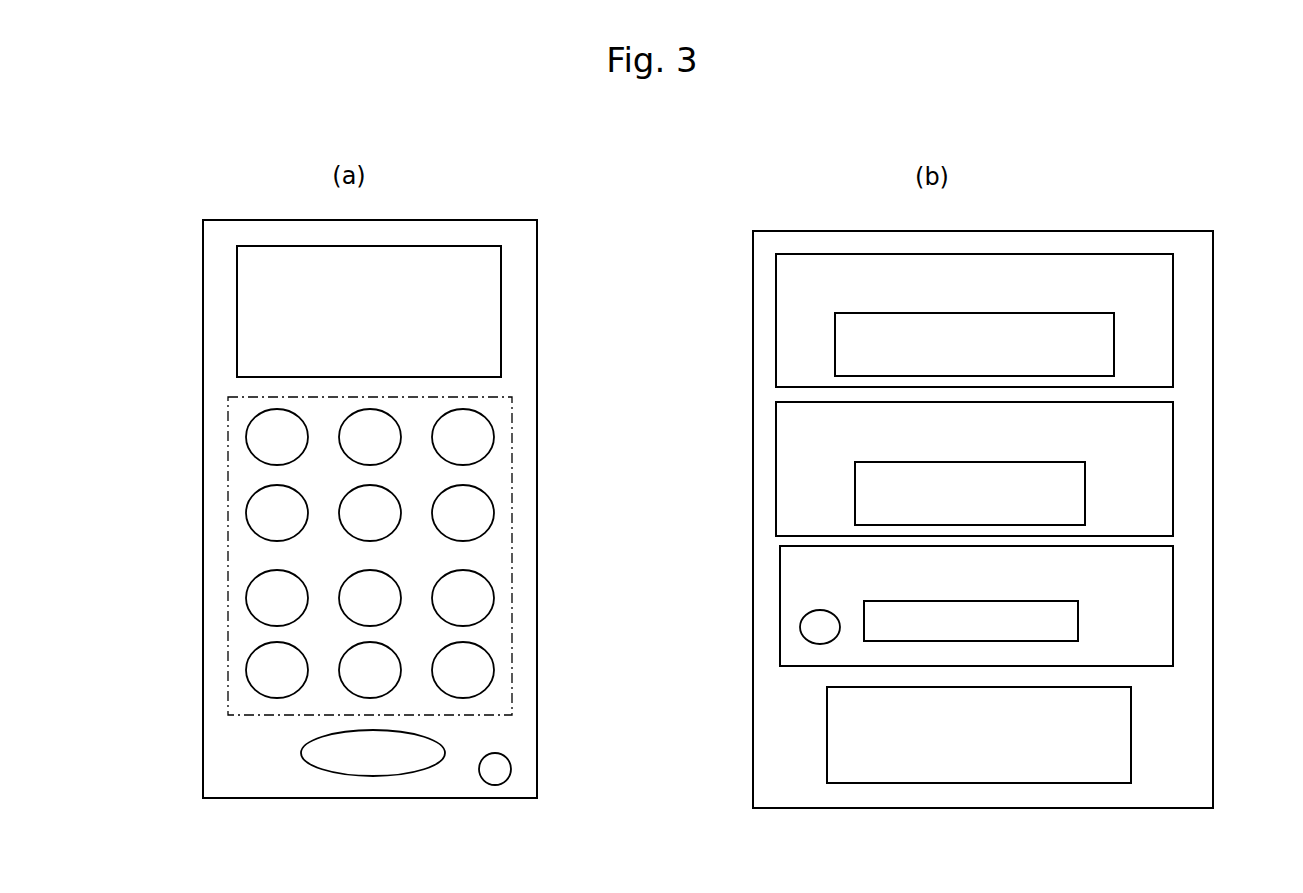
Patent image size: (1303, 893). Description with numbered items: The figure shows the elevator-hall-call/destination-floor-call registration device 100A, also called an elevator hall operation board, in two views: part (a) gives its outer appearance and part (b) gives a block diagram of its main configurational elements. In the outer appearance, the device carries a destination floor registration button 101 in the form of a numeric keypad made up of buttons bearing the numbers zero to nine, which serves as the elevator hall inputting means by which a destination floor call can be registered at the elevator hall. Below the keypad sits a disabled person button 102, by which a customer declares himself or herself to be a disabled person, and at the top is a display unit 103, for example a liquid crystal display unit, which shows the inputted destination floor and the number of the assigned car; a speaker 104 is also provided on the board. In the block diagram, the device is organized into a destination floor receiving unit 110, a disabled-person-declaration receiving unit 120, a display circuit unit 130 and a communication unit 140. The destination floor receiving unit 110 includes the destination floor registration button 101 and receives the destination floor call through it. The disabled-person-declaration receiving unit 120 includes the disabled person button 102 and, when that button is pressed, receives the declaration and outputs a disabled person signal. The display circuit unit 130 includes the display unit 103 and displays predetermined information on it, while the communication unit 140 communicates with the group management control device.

The elevator-hall-call/destination-floor-call registration device 100A is at (467, 202).
The destination floor registration button 101 is at (512, 468).
The disabled person button 102 is at (360, 763).
The display unit 103 is at (497, 342).
The speaker 104 is at (495, 770).
The destination floor receiving unit 110 is at (1177, 268).
The disabled-person-declaration receiving unit 120 is at (1177, 398).
The display circuit unit 130 is at (1165, 547).
The communication unit 140 is at (1135, 755).